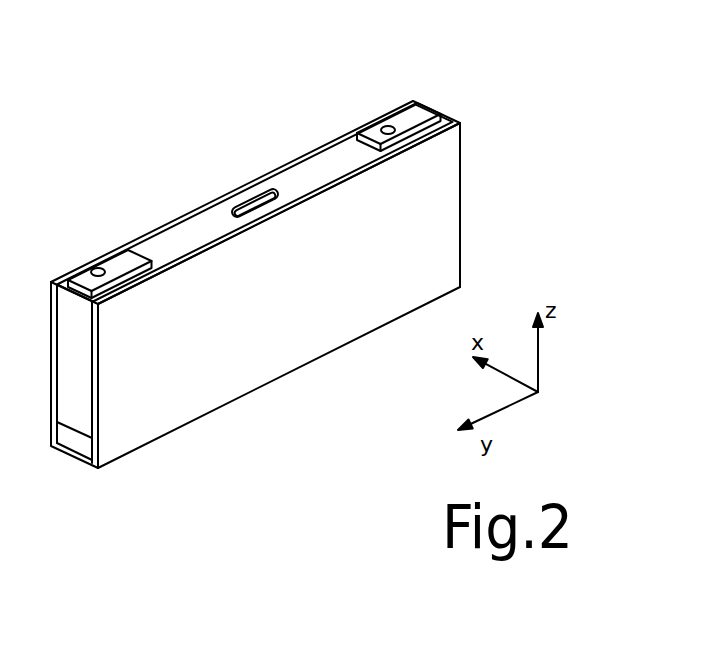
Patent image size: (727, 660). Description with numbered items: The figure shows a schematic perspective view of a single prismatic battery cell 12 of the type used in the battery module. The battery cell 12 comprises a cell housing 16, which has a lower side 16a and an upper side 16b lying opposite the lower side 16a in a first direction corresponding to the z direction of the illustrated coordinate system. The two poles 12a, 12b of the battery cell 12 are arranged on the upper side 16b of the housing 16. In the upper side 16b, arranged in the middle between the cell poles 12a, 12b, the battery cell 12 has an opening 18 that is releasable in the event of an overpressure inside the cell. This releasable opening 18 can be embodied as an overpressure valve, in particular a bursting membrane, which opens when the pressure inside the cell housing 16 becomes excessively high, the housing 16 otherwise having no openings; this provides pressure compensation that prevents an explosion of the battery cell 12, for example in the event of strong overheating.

The battery cell 12 is at (211, 157).
The cell pole 12a is at (403, 127).
The cell pole 12b is at (113, 262).
The cell housing 16 is at (439, 189).
The lower side 16a is at (350, 345).
The upper side 16b is at (320, 174).
The releasable opening 18 is at (253, 199).